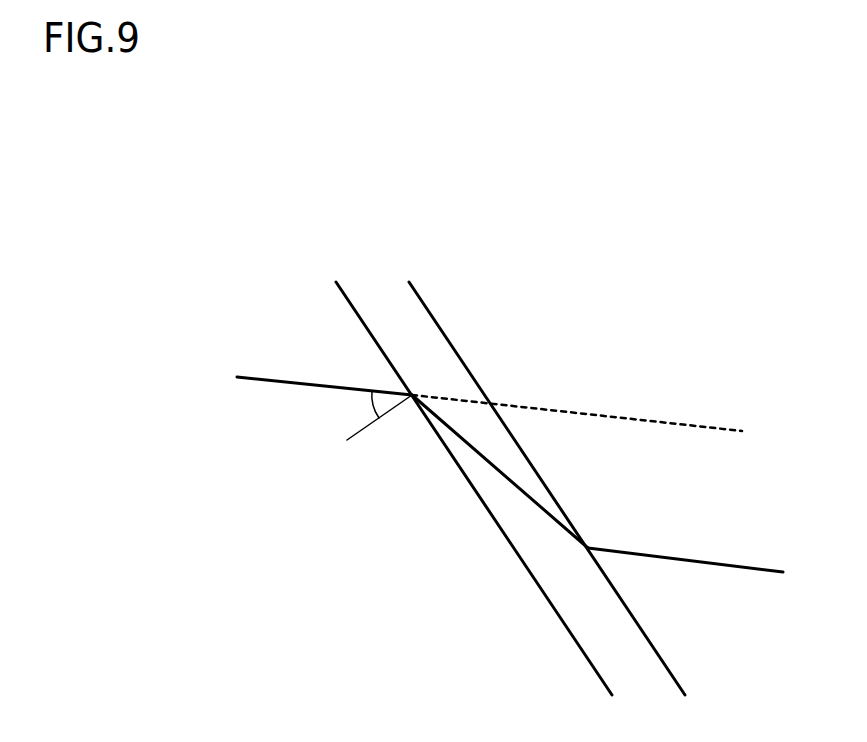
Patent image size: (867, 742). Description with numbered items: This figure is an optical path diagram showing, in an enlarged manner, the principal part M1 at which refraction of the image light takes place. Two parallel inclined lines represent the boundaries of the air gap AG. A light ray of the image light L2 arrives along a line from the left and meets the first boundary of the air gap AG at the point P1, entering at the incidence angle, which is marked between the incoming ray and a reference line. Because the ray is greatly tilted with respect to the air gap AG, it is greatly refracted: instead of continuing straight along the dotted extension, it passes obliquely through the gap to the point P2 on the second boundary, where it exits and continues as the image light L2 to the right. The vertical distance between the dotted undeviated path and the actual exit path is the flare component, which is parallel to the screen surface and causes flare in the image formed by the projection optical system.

The principal part M1 is at (276, 253).
The air gap AG is at (413, 312).
The first point P1 is at (415, 486).
The second point P2 is at (630, 486).
The image light L2 is at (708, 569).